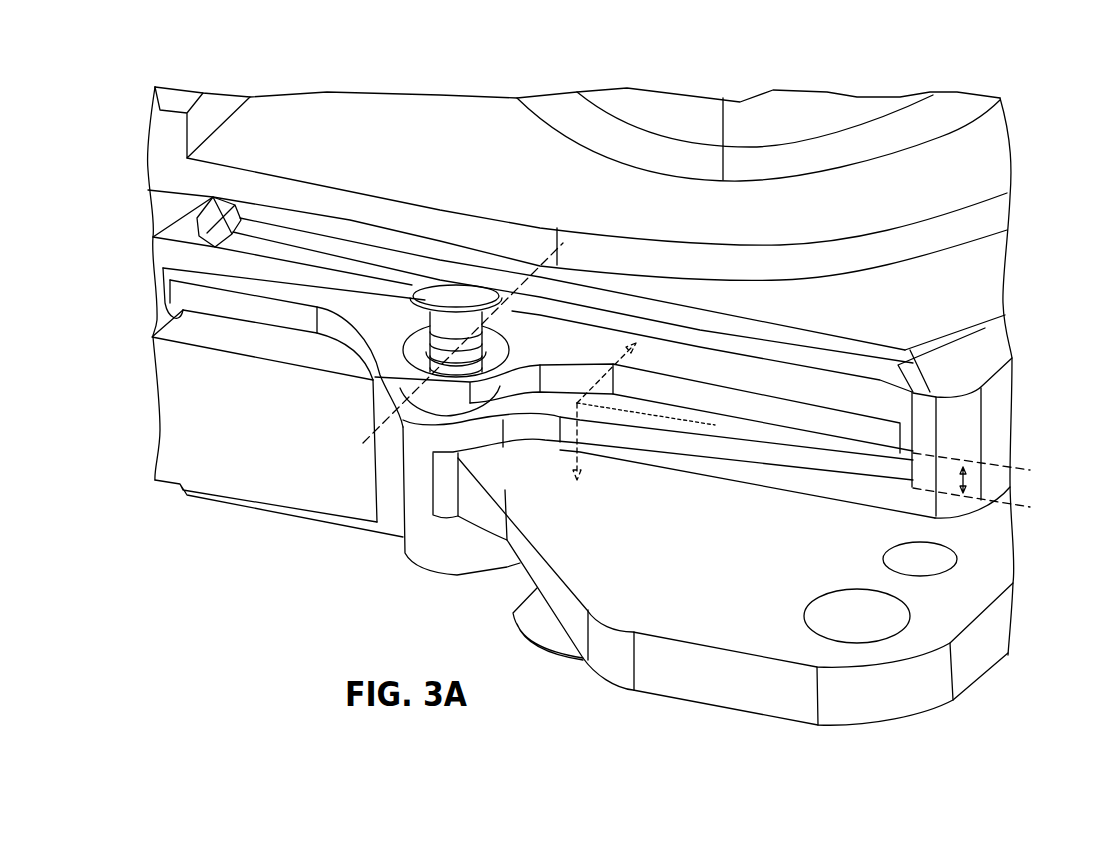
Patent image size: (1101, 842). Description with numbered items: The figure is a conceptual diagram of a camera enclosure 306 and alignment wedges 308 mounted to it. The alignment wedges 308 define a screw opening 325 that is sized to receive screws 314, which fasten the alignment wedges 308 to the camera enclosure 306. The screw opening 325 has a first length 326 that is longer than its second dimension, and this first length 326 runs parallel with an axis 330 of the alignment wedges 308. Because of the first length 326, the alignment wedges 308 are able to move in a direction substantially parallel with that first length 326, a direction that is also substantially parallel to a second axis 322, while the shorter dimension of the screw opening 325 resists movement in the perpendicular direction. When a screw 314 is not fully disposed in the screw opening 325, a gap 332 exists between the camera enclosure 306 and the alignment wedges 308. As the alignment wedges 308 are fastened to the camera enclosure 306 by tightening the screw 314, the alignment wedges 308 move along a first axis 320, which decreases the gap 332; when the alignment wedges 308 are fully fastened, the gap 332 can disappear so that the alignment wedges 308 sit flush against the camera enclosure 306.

The camera enclosure 306 is at (333, 525).
The alignment wedges 308 is at (845, 387).
The screws 314 is at (453, 290).
The first axis 320 is at (579, 458).
The second axis 322 is at (635, 346).
The screw opening 325 is at (373, 380).
The first length 326 is at (1040, 380).
The axis 330 is at (523, 290).
The gap 332 is at (1002, 480).